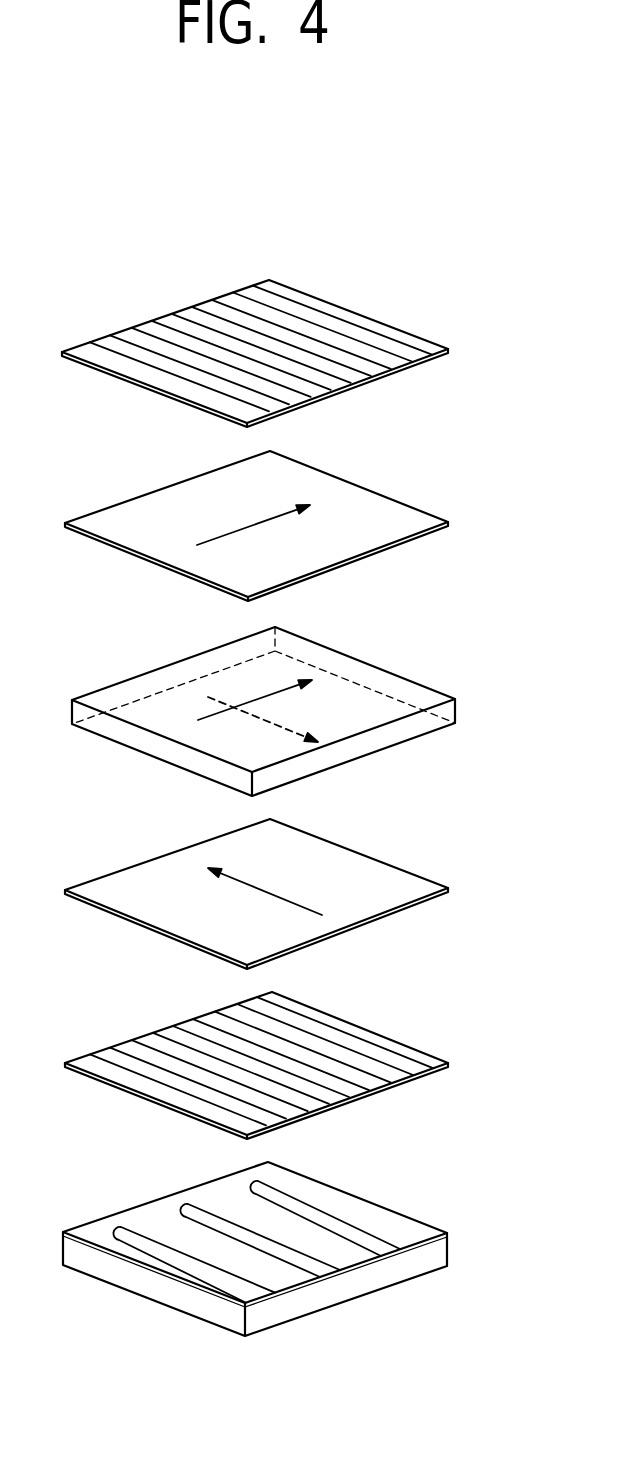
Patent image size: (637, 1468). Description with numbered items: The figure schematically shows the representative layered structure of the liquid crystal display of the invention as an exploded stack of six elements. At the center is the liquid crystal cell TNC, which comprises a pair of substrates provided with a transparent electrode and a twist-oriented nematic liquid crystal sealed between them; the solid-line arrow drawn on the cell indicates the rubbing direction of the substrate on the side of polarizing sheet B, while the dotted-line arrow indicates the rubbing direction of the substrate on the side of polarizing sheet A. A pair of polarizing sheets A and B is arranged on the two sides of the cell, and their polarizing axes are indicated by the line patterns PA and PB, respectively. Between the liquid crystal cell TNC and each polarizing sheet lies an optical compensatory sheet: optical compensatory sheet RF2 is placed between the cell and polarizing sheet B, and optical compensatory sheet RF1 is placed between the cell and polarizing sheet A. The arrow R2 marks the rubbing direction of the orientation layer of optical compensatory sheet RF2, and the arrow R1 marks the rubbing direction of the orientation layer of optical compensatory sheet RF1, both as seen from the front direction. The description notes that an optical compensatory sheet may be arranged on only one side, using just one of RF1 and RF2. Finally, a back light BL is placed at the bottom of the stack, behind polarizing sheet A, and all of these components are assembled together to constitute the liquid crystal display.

The polarizing sheet B is at (269, 353).
The polarizing axis PB is at (343, 323).
The optical compensatory sheet RF2 is at (286, 526).
The rubbing direction R2 is at (253, 517).
The liquid crystal cell TNC is at (296, 711).
The optical compensatory sheet RF1 is at (285, 894).
The rubbing direction R1 is at (266, 891).
The polarizing sheet A is at (267, 1065).
The polarizing axis PA is at (170, 1038).
The back light BL is at (277, 1249).